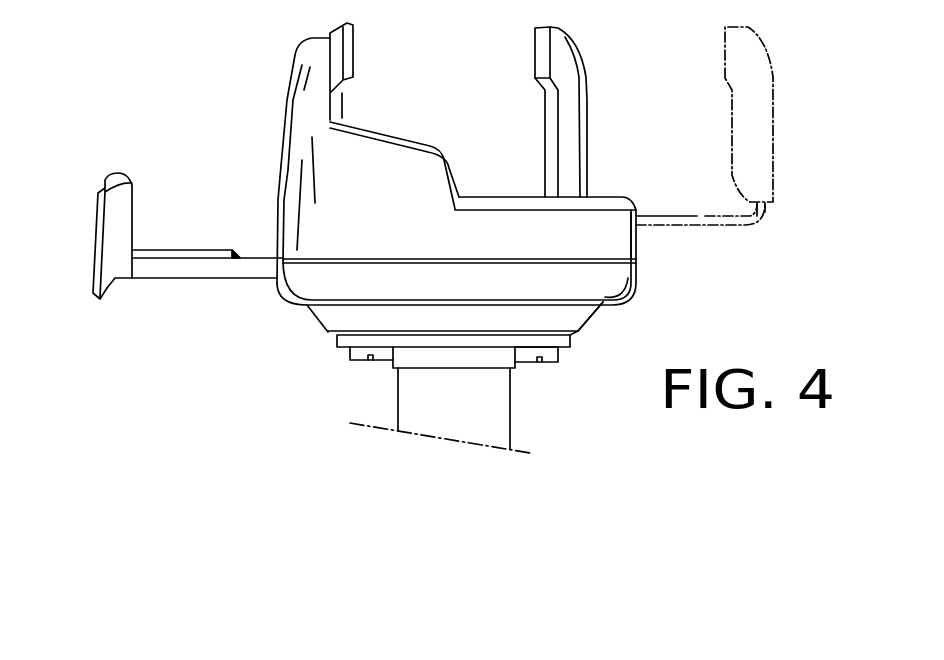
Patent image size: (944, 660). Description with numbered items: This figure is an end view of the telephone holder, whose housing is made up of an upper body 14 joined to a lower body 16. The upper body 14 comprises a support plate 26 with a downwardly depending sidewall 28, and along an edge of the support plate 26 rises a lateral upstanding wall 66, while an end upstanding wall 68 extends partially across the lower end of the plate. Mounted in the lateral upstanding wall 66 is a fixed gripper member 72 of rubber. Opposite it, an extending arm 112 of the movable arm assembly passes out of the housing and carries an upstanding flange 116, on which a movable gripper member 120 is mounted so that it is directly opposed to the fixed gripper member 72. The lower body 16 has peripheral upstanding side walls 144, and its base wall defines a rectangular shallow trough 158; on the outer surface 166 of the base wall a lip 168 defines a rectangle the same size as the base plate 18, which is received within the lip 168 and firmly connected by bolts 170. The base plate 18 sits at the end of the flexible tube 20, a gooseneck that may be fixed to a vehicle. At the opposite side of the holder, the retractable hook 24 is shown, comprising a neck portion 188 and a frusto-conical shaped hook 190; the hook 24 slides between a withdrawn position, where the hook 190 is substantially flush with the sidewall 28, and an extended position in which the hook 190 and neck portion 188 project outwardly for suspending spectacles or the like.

The upper body 14 is at (282, 157).
The lower body 16 is at (279, 299).
The base plate 18 is at (342, 341).
The flexible tube 20 is at (503, 422).
The retractable hook 24 is at (88, 232).
The support plate 26 is at (483, 201).
The sidewall 28 is at (620, 247).
The lateral upstanding wall 66 is at (302, 88).
The end upstanding wall 68 is at (391, 147).
The fixed gripper member 72 is at (328, 32).
The extending arm 112 is at (697, 215).
The upstanding flange 116 is at (763, 218).
The movable gripper member 120 is at (535, 60).
The peripheral upstanding side wall 144 is at (613, 301).
The rectangular shallow trough 158 is at (331, 318).
The outer surface 166 is at (614, 296).
The lip 168 is at (582, 333).
The bolt 170 is at (540, 355).
The neck portion 188 is at (180, 270).
The frusto-conical shaped hook 190 is at (108, 288).